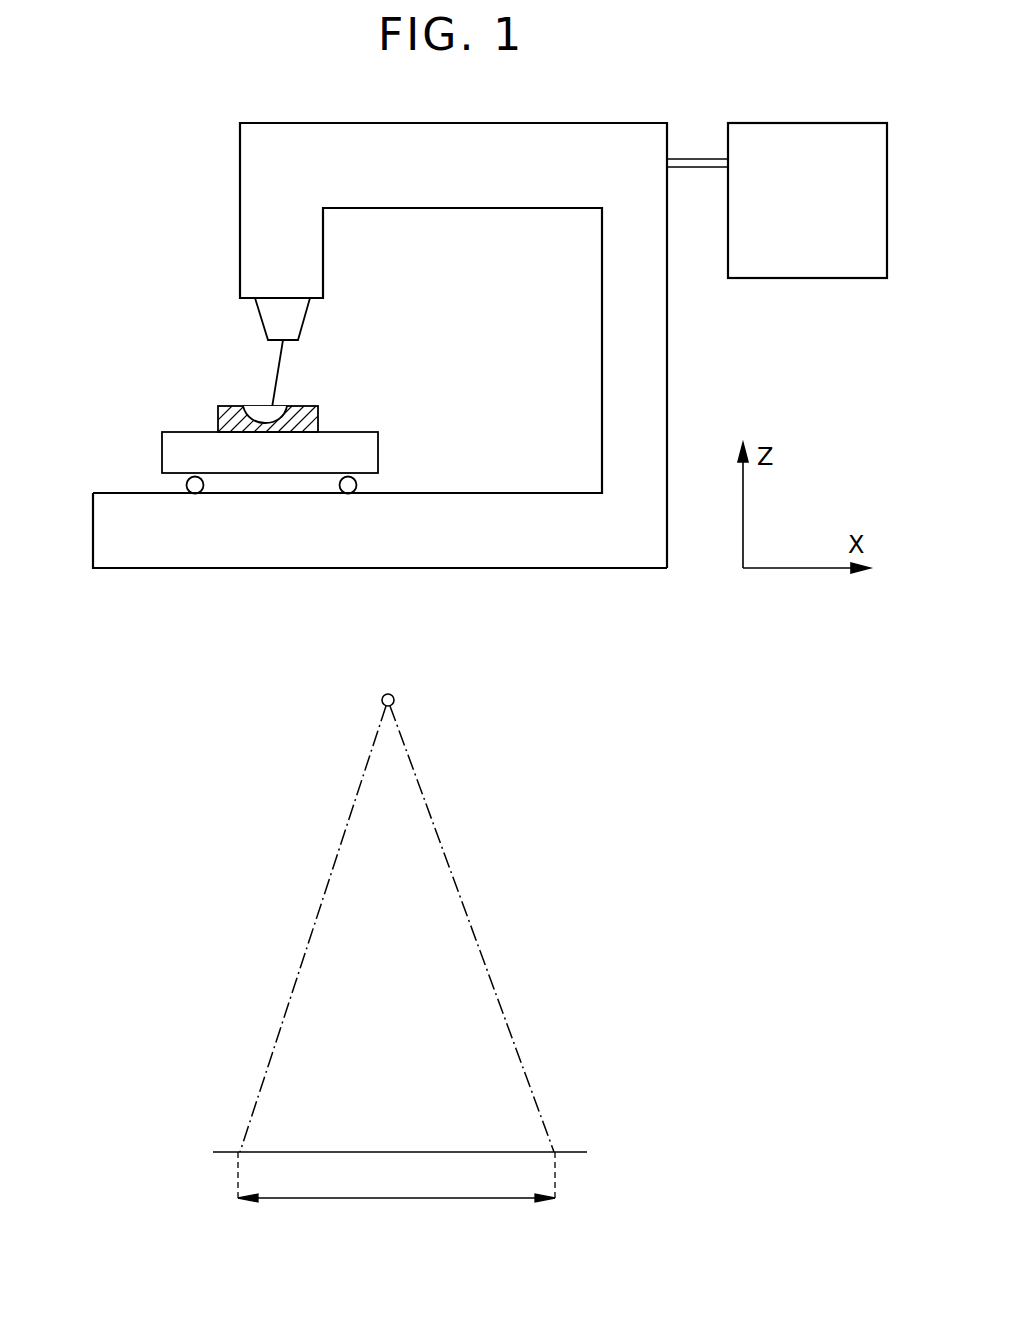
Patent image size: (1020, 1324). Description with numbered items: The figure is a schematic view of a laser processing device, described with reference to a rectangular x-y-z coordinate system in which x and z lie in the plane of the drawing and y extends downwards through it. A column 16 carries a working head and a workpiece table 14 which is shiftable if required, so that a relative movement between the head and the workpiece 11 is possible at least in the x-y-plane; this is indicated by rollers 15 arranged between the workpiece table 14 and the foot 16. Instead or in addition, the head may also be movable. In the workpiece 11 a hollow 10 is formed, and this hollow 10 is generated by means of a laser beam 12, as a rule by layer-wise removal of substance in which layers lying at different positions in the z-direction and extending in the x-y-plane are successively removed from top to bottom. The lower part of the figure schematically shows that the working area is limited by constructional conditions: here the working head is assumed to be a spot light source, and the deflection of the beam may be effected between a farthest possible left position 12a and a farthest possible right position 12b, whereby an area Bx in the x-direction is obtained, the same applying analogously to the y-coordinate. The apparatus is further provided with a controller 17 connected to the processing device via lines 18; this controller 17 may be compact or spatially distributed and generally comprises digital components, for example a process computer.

The hollow 10 is at (283, 412).
The workpiece 11 is at (222, 413).
The laser beam 12 is at (280, 362).
The farthest possible left position 12a is at (320, 907).
The farthest possible right position 12b is at (472, 923).
The workpiece table 14 is at (170, 443).
The rollers 15 is at (186, 485).
The column 16 is at (106, 513).
The controller 17 is at (814, 152).
The lines 18 is at (695, 158).
The working area in the x-direction Bx is at (389, 1200).